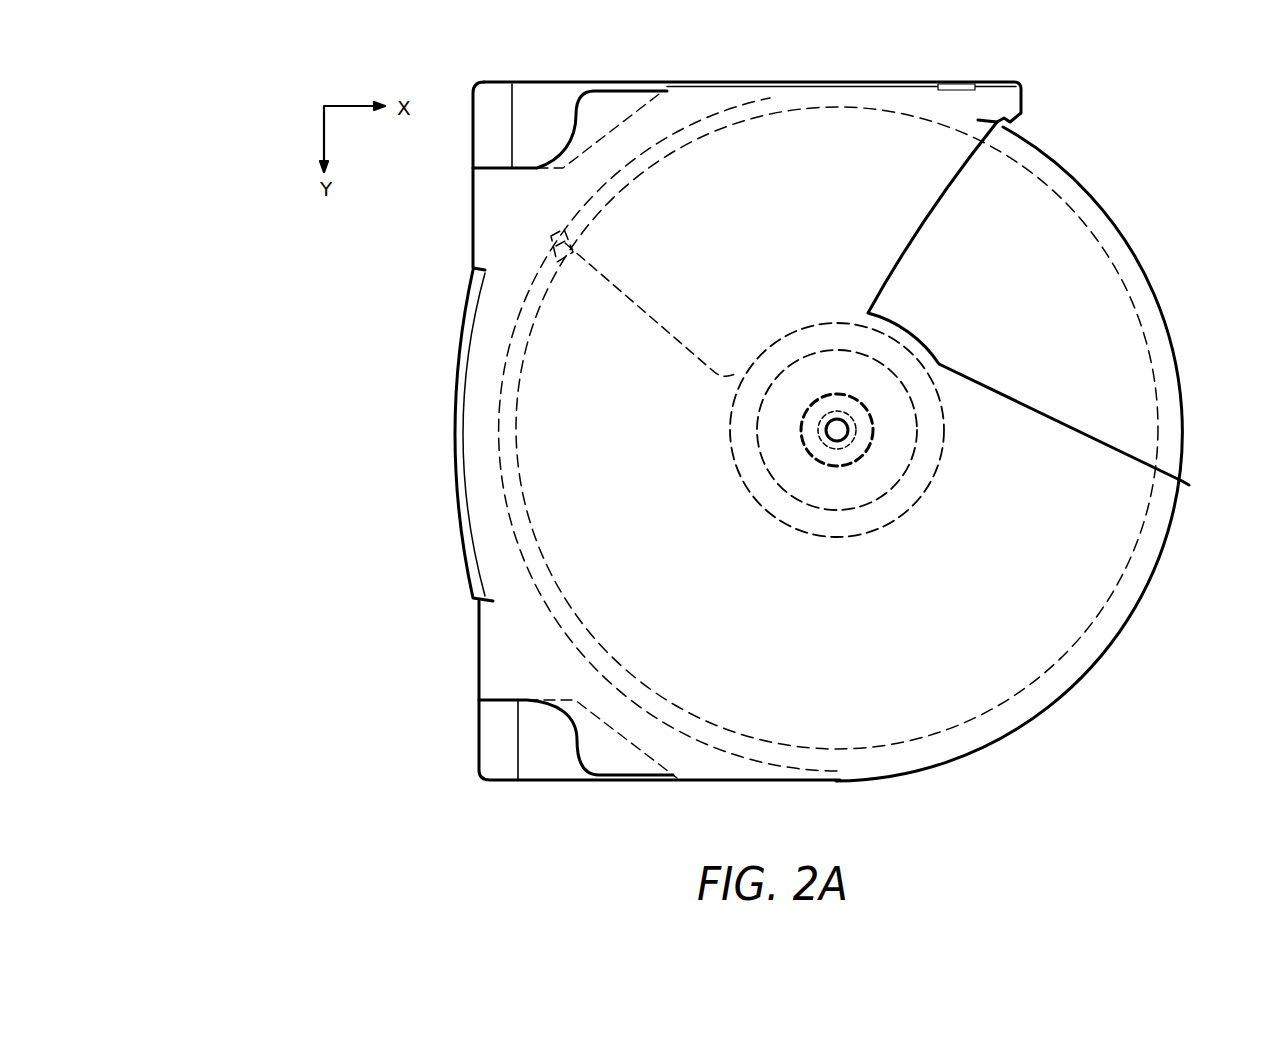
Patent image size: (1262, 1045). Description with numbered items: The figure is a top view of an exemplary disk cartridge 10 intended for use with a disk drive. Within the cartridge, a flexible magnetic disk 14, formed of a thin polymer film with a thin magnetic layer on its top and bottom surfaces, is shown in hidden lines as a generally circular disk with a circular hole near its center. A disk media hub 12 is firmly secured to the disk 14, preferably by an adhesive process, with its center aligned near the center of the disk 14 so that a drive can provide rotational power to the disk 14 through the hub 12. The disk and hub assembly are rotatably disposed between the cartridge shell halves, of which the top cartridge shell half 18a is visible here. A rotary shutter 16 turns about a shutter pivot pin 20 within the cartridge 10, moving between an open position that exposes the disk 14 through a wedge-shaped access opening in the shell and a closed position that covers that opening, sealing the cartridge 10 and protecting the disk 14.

The disk cartridge 10 is at (258, 756).
The disk media hub 12 is at (775, 415).
The flexible magnetic disk 14 is at (790, 175).
The rotary shutter 16 is at (1105, 213).
The top cartridge shell half 18a is at (1072, 605).
The shutter pivot pin 20 is at (848, 425).